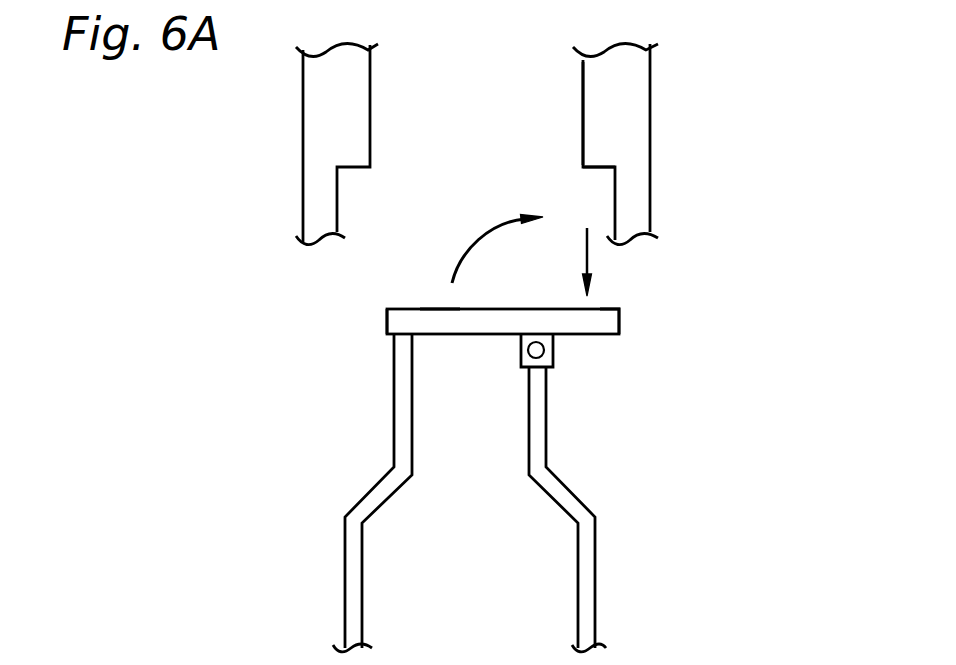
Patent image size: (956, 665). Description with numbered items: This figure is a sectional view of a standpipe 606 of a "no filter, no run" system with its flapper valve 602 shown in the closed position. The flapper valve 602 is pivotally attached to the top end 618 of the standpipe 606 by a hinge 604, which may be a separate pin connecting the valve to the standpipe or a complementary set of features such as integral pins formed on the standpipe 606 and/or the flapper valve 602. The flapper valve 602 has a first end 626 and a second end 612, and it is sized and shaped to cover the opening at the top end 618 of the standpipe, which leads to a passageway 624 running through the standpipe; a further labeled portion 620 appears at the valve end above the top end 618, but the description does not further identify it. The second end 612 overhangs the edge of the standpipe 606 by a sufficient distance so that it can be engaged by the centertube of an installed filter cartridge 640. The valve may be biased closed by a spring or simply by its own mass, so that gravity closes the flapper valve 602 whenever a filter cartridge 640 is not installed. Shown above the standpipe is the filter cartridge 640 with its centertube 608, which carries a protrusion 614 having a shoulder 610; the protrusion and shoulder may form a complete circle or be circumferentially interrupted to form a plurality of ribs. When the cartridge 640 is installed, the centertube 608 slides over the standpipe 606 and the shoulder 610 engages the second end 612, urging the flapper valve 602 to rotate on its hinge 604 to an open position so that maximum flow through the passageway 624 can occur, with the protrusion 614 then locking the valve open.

The flapper valve 602 is at (605, 327).
The hinge 604 is at (543, 357).
The standpipe 606 is at (588, 557).
The centertube 608 is at (640, 115).
The shoulder 610 is at (586, 182).
The second end 612 is at (619, 289).
The protrusion 614 is at (592, 113).
The top end 618 is at (381, 360).
The plate end 620 is at (403, 333).
The passageway 624 is at (496, 553).
The first end 626 is at (438, 288).
The filter cartridge 640 is at (686, 72).